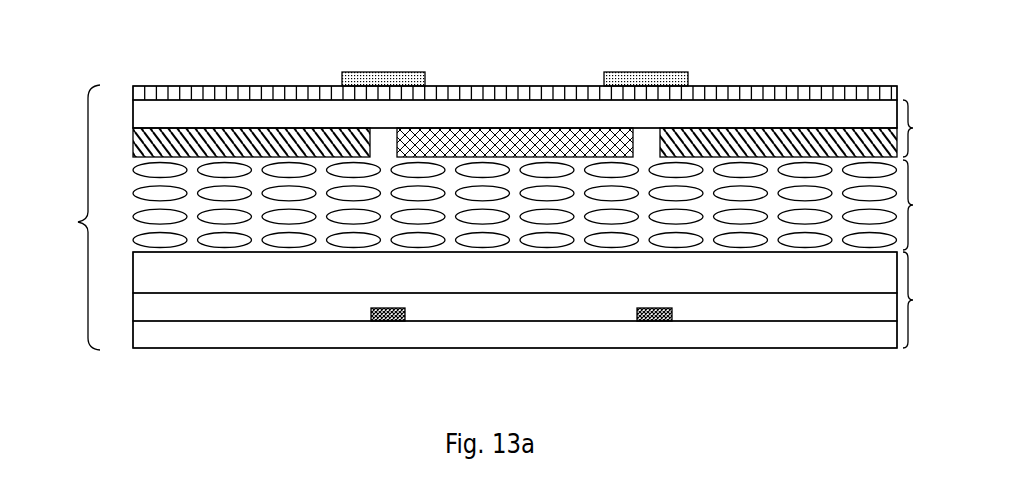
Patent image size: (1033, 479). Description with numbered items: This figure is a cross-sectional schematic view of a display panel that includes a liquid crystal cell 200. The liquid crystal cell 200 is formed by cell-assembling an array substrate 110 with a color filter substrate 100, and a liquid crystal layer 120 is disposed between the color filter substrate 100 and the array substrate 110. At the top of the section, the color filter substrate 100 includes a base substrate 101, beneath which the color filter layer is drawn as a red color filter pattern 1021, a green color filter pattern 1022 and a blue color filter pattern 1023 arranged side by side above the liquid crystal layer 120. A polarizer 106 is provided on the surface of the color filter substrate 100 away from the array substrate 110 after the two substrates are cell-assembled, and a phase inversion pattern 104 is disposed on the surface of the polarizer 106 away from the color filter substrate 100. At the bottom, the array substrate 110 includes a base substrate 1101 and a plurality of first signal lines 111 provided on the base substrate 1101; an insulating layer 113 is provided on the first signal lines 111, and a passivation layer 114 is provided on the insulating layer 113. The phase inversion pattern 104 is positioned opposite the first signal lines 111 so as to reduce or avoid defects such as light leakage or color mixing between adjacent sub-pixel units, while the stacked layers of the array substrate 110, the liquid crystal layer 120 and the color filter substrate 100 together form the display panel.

The liquid crystal cell 200 is at (66, 217).
The color filter substrate 100 is at (541, 121).
The base substrate 101 is at (515, 91).
The phase inversion pattern 104 is at (524, 65).
The polarizer 106 is at (515, 72).
The red color filter pattern 1021 is at (251, 90).
The green color filter pattern 1022 is at (515, 90).
The blue color filter pattern 1023 is at (778, 90).
The liquid crystal layer 120 is at (541, 205).
The array substrate 110 is at (541, 300).
The first signal line 111 is at (521, 349).
The insulating layer 113 is at (515, 341).
The passivation layer 114 is at (515, 321).
The base substrate 1101 is at (515, 355).